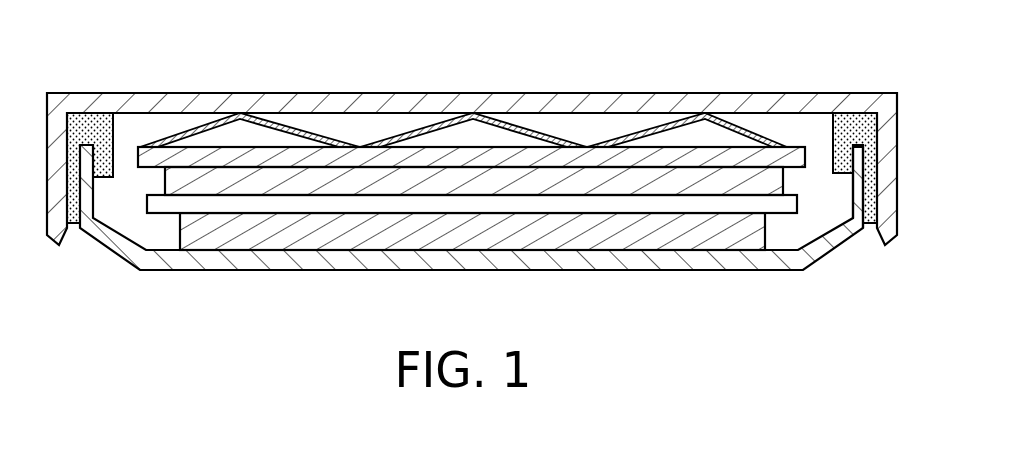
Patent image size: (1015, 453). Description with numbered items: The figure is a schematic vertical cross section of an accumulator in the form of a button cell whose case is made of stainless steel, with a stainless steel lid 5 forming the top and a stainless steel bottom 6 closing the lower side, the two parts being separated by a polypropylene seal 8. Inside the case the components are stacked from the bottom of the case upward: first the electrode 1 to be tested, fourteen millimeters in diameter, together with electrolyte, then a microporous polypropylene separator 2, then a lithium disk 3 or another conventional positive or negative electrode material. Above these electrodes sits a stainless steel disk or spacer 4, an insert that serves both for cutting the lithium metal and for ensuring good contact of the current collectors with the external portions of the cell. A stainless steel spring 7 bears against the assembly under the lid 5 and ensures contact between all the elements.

The electrode 1 is at (442, 233).
The microporous separator 2 is at (292, 205).
The lithium disk 3 is at (420, 178).
The stainless steel insert 4 is at (544, 158).
The stainless steel lid 5 is at (195, 103).
The stainless steel bottom 6 is at (122, 252).
The spring 7 is at (773, 136).
The polypropylene seal 8 is at (868, 162).